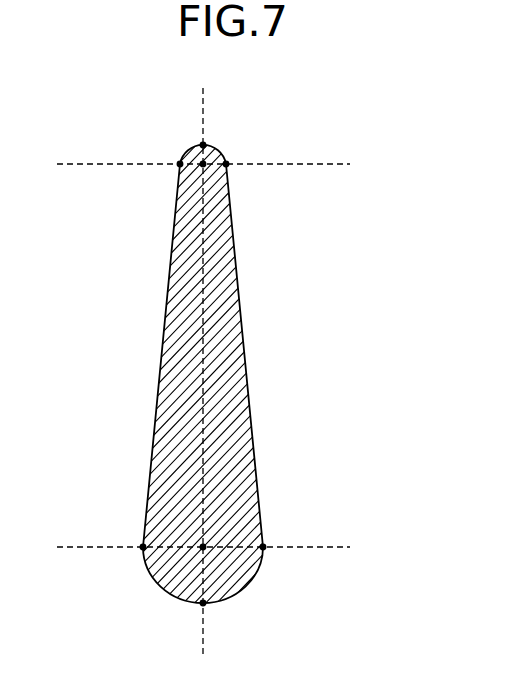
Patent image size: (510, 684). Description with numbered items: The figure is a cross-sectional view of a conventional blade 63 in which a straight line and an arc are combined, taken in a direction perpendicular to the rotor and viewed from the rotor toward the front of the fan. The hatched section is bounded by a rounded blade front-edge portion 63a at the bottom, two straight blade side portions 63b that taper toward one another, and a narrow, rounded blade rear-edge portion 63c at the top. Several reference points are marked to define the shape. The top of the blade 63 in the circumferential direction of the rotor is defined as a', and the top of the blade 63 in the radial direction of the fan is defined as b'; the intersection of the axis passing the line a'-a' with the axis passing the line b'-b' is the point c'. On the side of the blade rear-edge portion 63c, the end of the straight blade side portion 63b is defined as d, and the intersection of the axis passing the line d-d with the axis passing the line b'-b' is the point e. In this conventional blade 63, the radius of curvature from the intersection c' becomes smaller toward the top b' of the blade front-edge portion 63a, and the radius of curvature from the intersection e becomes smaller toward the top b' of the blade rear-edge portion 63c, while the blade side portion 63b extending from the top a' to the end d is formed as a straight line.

The conventional blade 63 is at (211, 369).
The blade front-edge portion 63a is at (222, 599).
The blade side portion 63b is at (162, 345).
The blade rear-edge portion 63c is at (204, 145).
The top of the blade in the circumferential direction a' is at (203, 575).
The top of the blade in the radial direction b' is at (170, 381).
The intersection of axes a'-a' and b'-b' c' is at (245, 507).
The end of the straight blade side portion d is at (180, 164).
The intersection of axes d-d and b'-b' e is at (203, 164).